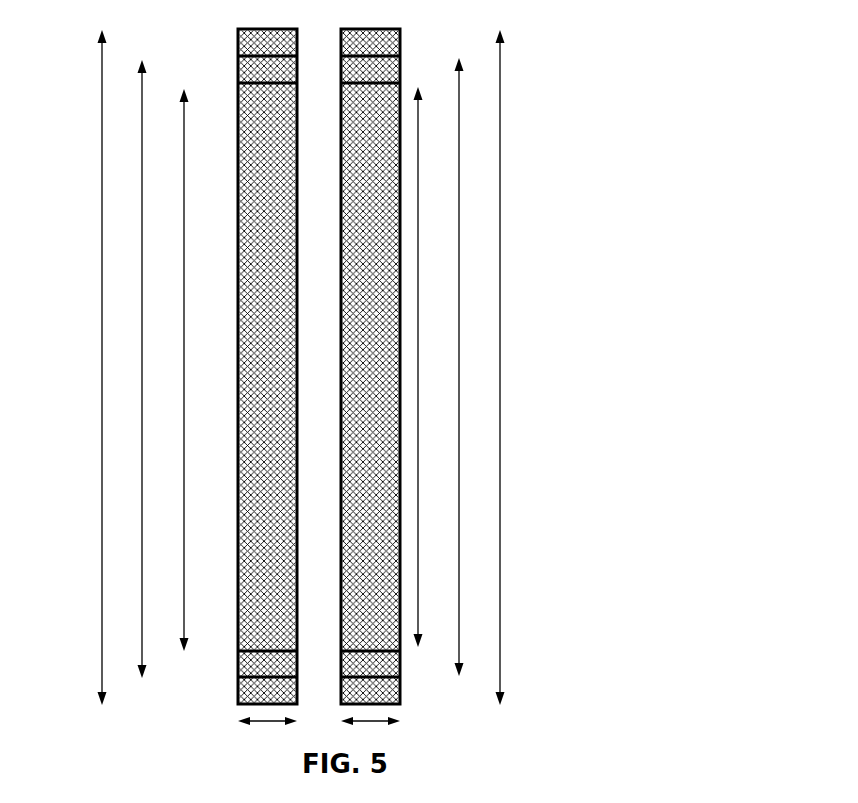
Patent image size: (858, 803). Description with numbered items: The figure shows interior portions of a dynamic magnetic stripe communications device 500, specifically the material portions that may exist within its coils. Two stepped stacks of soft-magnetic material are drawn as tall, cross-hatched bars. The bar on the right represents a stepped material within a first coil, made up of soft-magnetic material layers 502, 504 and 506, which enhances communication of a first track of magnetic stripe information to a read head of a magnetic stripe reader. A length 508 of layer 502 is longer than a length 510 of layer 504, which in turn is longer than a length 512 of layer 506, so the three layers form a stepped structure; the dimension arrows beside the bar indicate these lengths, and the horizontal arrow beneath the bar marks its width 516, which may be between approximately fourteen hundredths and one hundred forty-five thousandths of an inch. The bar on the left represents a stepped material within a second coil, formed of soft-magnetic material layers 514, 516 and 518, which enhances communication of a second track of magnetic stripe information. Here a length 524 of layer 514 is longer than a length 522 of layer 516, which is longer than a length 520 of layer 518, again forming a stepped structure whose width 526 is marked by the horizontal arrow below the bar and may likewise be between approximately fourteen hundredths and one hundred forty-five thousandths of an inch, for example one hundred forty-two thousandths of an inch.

The multilayer electrode structure 500 is at (807, 385).
The soft-magnetic material layer 502 is at (341, 700).
The soft-magnetic material layer 504 is at (341, 662).
The soft-magnetic material layer 506 is at (341, 623).
The length of layer 502 508 is at (500, 80).
The length of layer 504 510 is at (459, 117).
The length of layer 506 512 is at (418, 143).
The soft-magnetic material layer 514 is at (238, 698).
The soft-magnetic material layer / width of stepped structure 516 is at (238, 660).
The soft-magnetic material layer 518 is at (238, 622).
The length of layer 518 520 is at (184, 130).
The length of layer 516 522 is at (142, 165).
The length of layer 514 524 is at (102, 193).
The width of stepped structure 526 is at (268, 722).